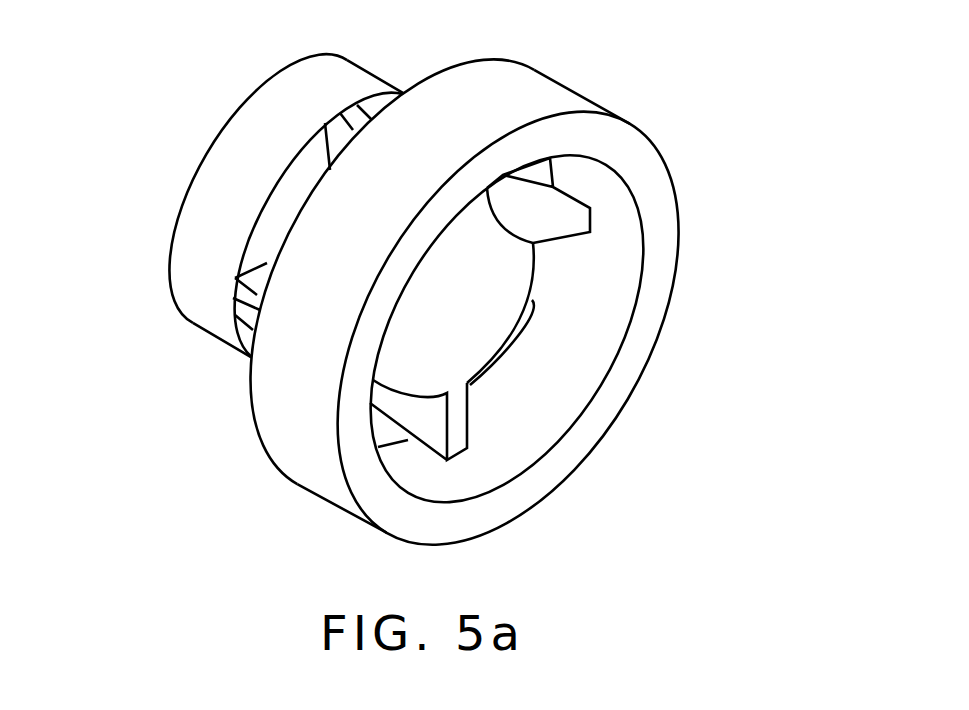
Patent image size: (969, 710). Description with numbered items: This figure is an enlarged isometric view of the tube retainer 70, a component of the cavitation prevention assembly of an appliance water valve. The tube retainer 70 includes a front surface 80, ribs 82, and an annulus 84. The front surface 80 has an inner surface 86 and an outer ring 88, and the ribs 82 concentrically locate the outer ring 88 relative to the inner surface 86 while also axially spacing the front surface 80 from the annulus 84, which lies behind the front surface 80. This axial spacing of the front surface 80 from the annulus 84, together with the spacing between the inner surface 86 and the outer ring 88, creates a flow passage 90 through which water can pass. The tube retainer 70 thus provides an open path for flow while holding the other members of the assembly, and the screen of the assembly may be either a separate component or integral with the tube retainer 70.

The tube retainer 70 is at (700, 117).
The front surface 80 is at (610, 398).
The ribs 82 is at (550, 217).
The annulus 84 is at (243, 137).
The inner surface 86 is at (453, 338).
The outer ring 88 is at (273, 385).
The flow passage 90 is at (270, 228).